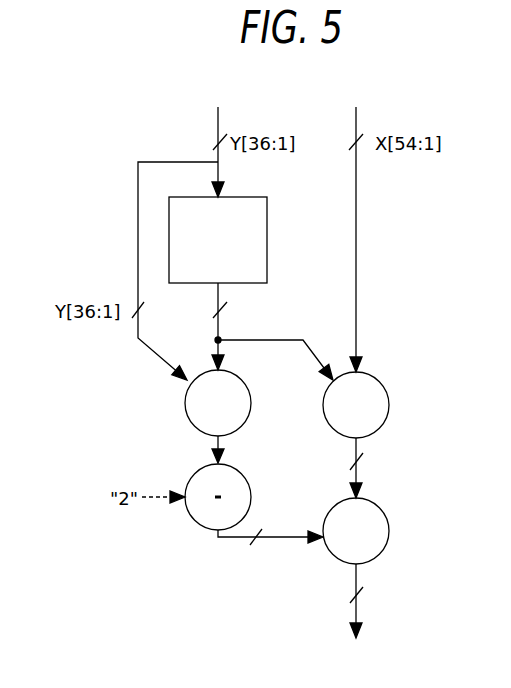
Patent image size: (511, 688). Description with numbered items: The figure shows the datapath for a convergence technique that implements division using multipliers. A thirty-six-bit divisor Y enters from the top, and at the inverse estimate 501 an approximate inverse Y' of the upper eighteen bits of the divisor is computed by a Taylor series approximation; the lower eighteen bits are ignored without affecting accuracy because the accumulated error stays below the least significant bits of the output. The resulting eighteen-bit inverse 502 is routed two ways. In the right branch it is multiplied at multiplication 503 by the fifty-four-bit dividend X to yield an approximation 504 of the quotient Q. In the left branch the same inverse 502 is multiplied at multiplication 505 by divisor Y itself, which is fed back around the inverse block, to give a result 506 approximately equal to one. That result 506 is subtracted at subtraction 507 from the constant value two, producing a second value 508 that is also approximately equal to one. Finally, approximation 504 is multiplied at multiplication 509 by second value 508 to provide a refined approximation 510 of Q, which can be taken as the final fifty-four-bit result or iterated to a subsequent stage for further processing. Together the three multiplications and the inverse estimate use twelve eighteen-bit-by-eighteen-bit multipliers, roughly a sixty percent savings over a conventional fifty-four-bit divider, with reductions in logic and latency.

The inverse estimate 501 is at (243, 197).
The eighteen-bit inverse 502 is at (218, 330).
The multiplication 503 is at (372, 378).
The approximation of Q 504 is at (355, 451).
The multiplication 505 is at (241, 378).
The result 506 is at (221, 441).
The subtraction 507 is at (248, 487).
The second value 508 is at (218, 540).
The multiplication 509 is at (385, 513).
The approximation of Q 510 is at (358, 610).